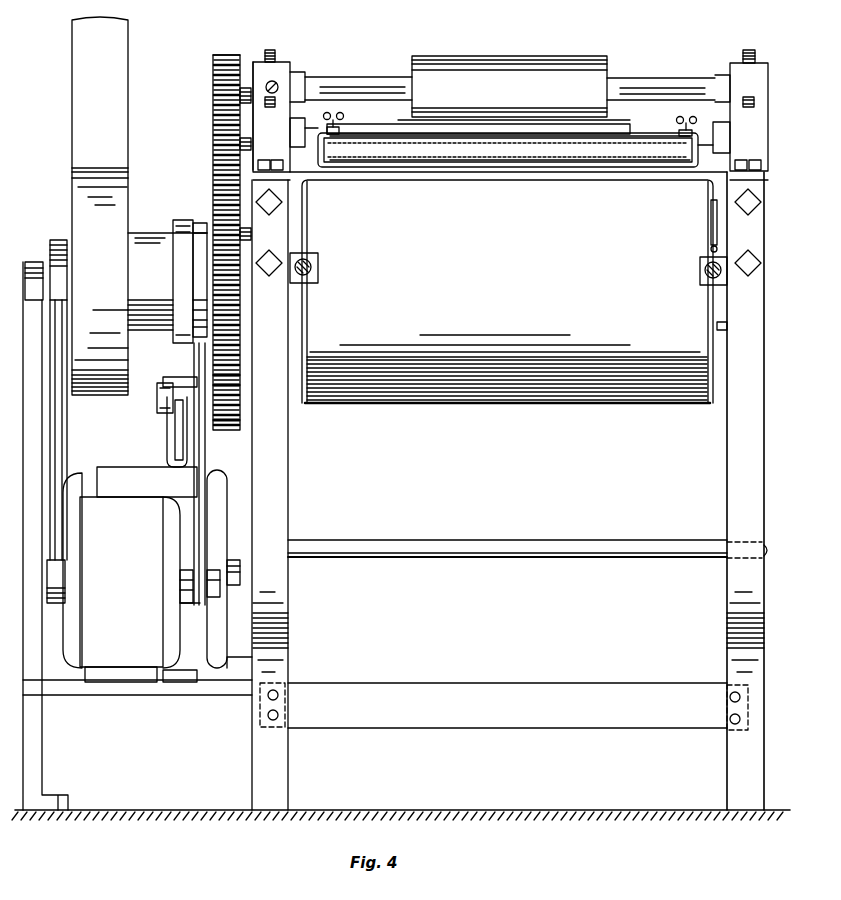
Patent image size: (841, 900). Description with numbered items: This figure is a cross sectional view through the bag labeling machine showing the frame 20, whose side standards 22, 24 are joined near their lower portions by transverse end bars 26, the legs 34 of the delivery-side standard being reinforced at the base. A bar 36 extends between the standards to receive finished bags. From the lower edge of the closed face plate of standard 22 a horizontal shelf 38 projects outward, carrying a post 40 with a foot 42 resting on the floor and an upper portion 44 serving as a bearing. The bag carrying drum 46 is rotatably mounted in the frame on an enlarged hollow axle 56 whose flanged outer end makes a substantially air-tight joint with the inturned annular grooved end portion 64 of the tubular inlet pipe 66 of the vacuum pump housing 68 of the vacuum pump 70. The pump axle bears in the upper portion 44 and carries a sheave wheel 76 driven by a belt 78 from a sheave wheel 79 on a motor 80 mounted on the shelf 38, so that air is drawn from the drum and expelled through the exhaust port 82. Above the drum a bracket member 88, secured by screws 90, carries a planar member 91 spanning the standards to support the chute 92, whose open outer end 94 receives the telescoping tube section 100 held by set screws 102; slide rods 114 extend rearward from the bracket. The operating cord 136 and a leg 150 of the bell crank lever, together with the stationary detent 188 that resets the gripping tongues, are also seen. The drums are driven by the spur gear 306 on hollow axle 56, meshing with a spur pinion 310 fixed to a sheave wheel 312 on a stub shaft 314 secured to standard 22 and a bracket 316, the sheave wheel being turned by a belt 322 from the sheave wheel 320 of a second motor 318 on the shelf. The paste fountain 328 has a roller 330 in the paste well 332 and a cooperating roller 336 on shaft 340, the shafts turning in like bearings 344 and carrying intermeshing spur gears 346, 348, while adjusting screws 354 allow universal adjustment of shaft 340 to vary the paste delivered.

The frame 20 is at (284, 488).
The side standard 22 is at (252, 782).
The side standard 24 is at (758, 621).
The transverse end bars 26 is at (386, 730).
The legs 34 is at (760, 732).
The bar 36 is at (528, 557).
The shelf 38 is at (213, 695).
The post 40 is at (40, 757).
The foot 42 is at (62, 795).
The upper portion of post 44 is at (32, 657).
The bag carrying drum 46 is at (515, 404).
The hollow axle 56 is at (200, 224).
The inturned annular grooved end portion 64 is at (178, 220).
The tubular inlet pipe 66 is at (146, 238).
The vacuum pump housing 68 is at (128, 172).
The vacuum pump 70 is at (100, 348).
The sheave wheel 76 is at (52, 240).
The belt 78 is at (63, 434).
The sheave wheel 79 is at (47, 523).
The motor 80 is at (147, 482).
The exhaust port 82 is at (125, 68).
The bracket member 88 is at (340, 175).
The screws 90 is at (282, 216).
The planar member 91 is at (637, 175).
The chute 92 is at (478, 168).
The open outer end 94 is at (443, 133).
The telescoping tube section 100 is at (543, 160).
The set screws 102 is at (338, 119).
The slide rods 114 is at (313, 266).
The operating cord 136 is at (711, 249).
The leg of bell crank lever 150 is at (711, 230).
The stationary detent 188 is at (717, 328).
The spur gear 306 is at (237, 390).
The spur pinion 310 is at (230, 437).
The sheave wheel 312 is at (193, 368).
The stub shaft 314 is at (157, 400).
The bracket 316 is at (172, 455).
The motor 318 is at (153, 576).
The sheave wheel 320 is at (197, 610).
The belt 322 is at (200, 623).
The paste fountain 328 is at (292, 63).
The roller 330 is at (460, 117).
The paste well 332 is at (615, 130).
The cooperating roller 336 is at (517, 70).
The shaft 340 is at (663, 83).
The bearings 344 is at (257, 113).
The spur gear 346 is at (213, 127).
The spur gear 348 is at (213, 55).
The adjusting screws 354 is at (274, 82).